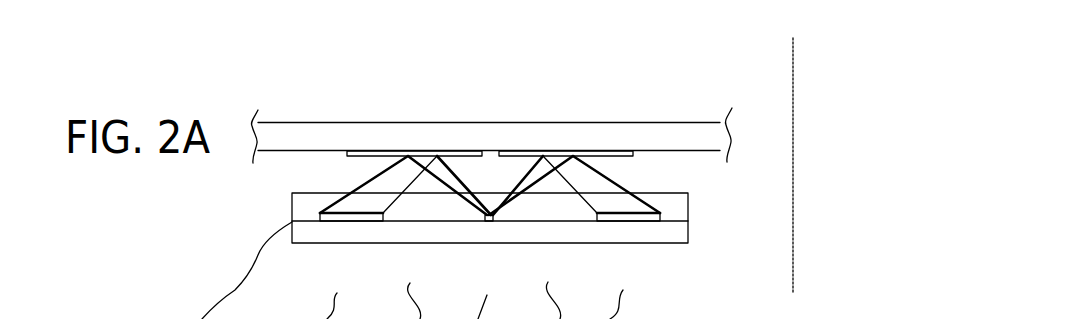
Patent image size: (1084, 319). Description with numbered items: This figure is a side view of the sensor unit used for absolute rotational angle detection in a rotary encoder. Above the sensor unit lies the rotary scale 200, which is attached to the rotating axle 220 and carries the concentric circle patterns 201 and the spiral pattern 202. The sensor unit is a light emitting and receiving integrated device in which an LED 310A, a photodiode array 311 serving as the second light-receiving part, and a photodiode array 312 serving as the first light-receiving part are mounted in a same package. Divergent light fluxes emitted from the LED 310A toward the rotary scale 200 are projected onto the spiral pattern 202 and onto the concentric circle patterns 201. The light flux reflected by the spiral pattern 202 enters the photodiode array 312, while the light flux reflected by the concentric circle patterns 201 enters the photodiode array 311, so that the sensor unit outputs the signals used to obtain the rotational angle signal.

The rotary scale 200 is at (652, 122).
The rotating axle 220 is at (793, 57).
The concentric circle patterns 201 is at (532, 157).
The spiral pattern 202 is at (387, 157).
The LED 310A is at (488, 222).
The photodiode array 311 is at (627, 222).
The photodiode array 312 is at (347, 222).